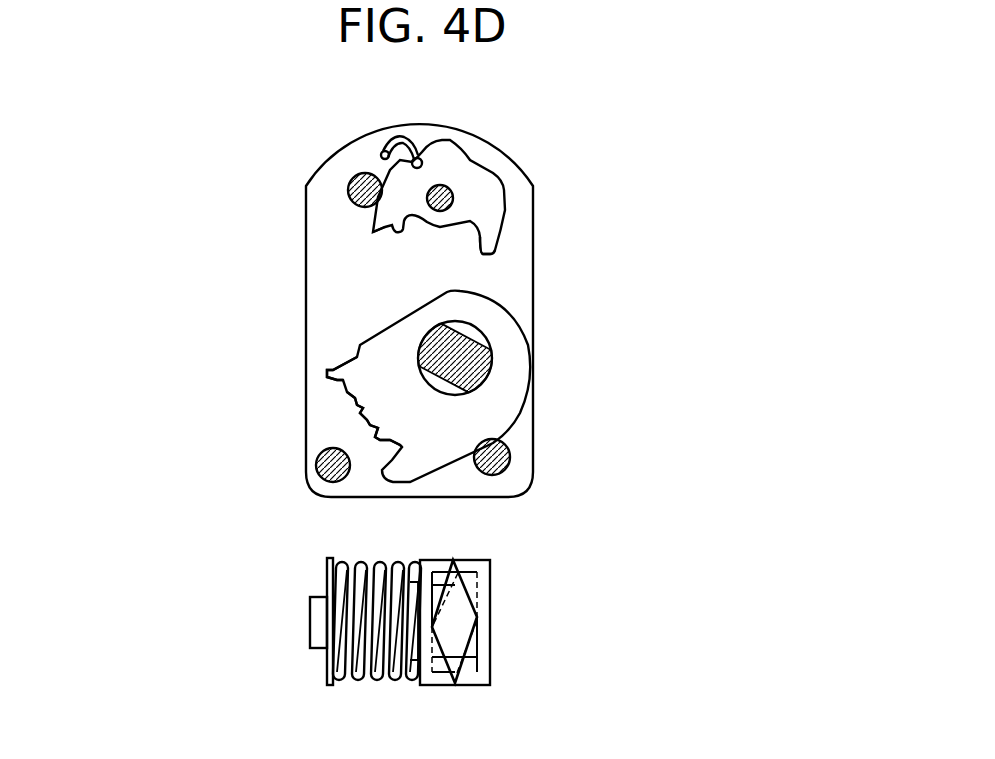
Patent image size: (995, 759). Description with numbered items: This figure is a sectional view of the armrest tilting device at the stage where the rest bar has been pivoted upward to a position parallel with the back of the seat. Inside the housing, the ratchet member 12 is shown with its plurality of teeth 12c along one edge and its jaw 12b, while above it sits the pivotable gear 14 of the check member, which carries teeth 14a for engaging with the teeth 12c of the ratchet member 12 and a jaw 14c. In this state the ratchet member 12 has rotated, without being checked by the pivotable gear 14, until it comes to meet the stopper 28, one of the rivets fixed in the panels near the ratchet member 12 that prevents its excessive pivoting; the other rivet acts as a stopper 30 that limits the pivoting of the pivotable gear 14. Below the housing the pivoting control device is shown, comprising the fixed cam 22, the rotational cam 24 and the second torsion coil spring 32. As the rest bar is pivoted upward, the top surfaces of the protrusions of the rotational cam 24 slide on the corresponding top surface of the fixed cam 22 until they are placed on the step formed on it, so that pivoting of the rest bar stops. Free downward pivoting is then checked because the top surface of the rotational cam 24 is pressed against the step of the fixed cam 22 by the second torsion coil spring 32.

The ratchet member 12 is at (520, 357).
The jaw 12b is at (333, 372).
The teeth 12c is at (367, 412).
The pivotable gear 14 is at (472, 170).
The teeth 14a is at (372, 233).
The jaw 14c is at (483, 247).
The fixed cam 22 is at (432, 565).
The rotational cam 24 is at (480, 567).
The stopper 28 is at (493, 458).
The stopper 30 is at (352, 180).
The second torsion coil spring 32 is at (350, 563).